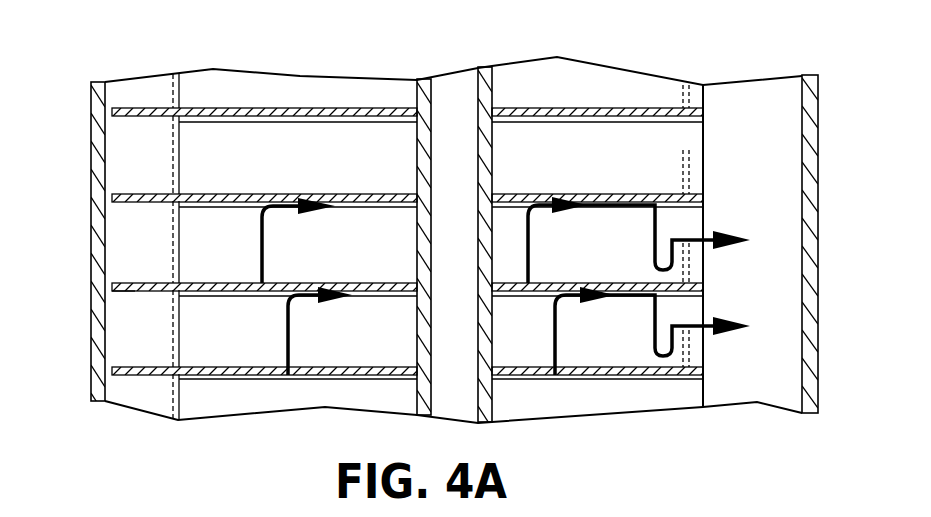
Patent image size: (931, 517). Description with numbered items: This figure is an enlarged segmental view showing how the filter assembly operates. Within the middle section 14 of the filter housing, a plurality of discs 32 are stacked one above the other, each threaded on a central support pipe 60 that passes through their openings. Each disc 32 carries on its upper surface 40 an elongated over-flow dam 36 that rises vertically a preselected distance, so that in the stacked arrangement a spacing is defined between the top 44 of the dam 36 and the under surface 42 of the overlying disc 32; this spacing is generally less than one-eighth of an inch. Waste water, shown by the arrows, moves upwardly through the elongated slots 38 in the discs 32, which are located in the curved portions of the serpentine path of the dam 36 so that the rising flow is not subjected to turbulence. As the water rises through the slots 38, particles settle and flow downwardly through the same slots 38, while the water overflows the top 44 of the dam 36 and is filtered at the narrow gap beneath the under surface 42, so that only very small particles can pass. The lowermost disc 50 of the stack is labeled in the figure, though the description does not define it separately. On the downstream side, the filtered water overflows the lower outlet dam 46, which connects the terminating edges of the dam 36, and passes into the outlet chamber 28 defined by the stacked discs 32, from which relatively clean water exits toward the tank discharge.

The middle section 14 is at (97, 248).
The outlet chamber 28 is at (778, 171).
The disc 32 is at (125, 107).
The over-flow dam 36 is at (306, 168).
The elongated slots 38 is at (278, 121).
The upper surface 40 is at (127, 193).
The under surface 42 is at (142, 293).
The top of the dam 44 is at (322, 122).
The outlet dam 46 is at (693, 258).
The bottom shelf 50 is at (580, 381).
The support pipe 60 is at (487, 93).